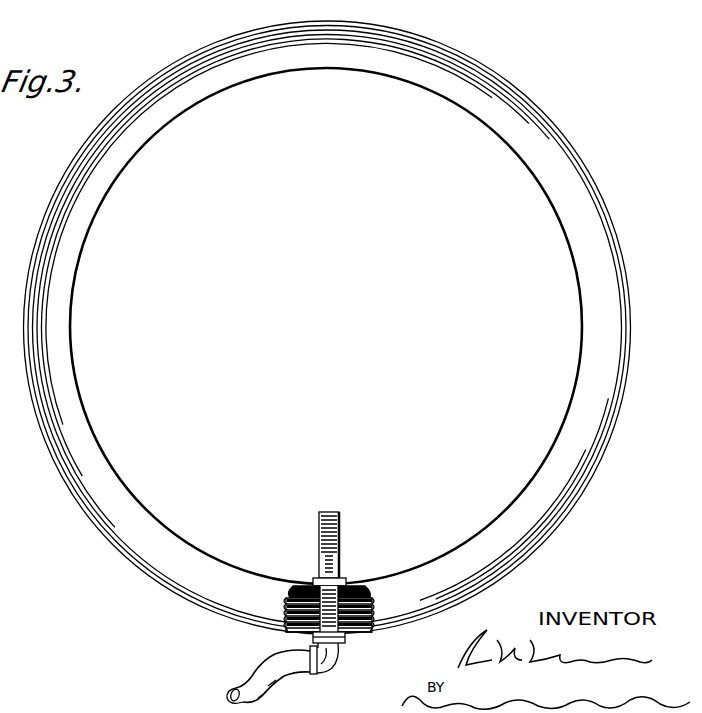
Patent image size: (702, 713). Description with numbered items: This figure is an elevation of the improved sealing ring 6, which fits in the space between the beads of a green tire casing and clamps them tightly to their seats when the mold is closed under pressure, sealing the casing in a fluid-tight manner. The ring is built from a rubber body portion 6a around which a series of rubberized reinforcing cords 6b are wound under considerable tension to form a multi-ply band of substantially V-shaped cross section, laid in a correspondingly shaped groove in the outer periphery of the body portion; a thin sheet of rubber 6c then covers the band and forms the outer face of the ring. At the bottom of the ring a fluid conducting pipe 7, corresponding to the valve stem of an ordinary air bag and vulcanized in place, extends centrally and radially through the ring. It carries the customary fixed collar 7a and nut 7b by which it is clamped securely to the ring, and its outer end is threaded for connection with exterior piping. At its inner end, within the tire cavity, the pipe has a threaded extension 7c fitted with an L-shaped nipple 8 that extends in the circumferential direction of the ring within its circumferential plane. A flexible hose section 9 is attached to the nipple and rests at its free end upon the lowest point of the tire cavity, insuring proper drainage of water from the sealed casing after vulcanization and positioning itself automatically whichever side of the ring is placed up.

The sealing ring 6 is at (327, 327).
The rubber body portion 6a is at (350, 590).
The rubberized reinforcing cords 6b is at (356, 636).
The thin sheet of rubber 6c is at (348, 641).
The fluid conducting pipe 7 is at (318, 546).
The fixed collar 7a is at (318, 637).
The nut 7b is at (313, 579).
The threaded extension 7c is at (324, 672).
The L-shaped nipple 8 is at (313, 670).
The flexible hose section 9 is at (256, 669).